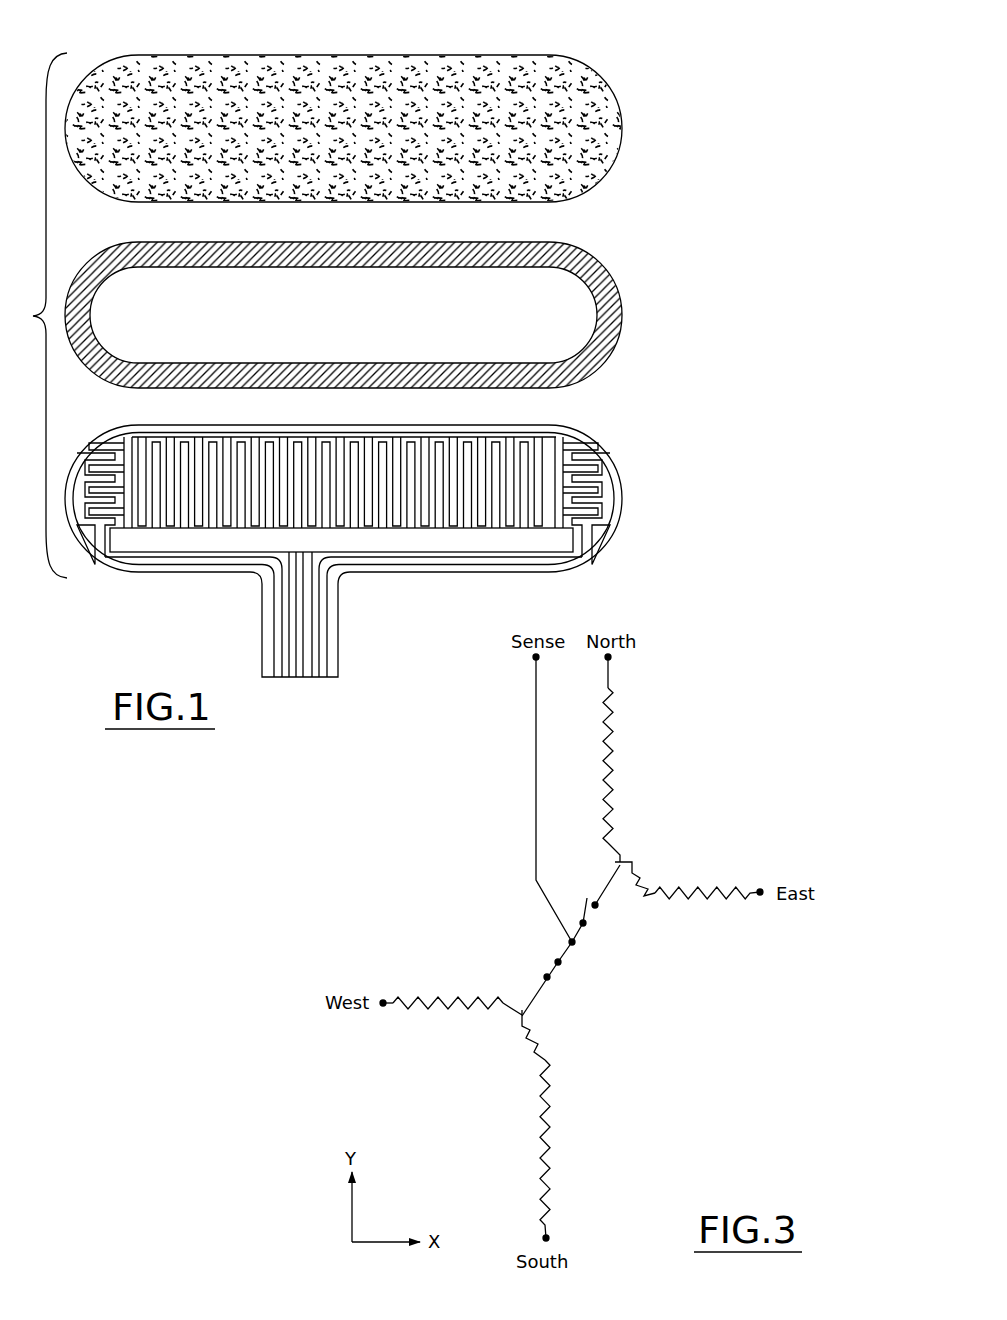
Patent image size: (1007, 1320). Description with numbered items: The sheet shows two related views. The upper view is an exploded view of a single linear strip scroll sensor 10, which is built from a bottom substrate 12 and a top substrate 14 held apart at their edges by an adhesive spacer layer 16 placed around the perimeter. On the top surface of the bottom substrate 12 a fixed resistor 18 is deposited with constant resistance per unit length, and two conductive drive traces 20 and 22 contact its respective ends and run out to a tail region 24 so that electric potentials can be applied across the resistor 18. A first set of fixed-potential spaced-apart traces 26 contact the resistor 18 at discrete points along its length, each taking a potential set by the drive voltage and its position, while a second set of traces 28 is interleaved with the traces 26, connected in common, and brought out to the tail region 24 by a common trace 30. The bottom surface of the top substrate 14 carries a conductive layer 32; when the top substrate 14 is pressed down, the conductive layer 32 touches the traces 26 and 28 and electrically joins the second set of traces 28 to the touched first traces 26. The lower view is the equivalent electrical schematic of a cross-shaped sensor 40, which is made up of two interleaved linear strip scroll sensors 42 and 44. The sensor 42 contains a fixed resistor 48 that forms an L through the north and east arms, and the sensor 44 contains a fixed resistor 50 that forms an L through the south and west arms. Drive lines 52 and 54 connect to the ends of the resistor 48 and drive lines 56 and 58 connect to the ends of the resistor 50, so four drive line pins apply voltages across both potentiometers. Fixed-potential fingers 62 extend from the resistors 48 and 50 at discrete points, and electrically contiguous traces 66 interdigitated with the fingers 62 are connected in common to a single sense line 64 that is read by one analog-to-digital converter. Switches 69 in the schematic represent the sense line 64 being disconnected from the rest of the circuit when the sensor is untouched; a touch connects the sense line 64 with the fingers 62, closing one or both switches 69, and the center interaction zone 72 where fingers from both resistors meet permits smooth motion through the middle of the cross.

In FIG. 1, the strip scroll sensor 10 is at (70, 380).
In FIG. 1, the bottom substrate 12 is at (376, 579).
In FIG. 1, the top substrate 14 is at (374, 103).
In FIG. 1, the adhesive spacer layer 16 is at (604, 257).
In FIG. 1, the fixed resistor 18 is at (148, 542).
In FIG. 1, the drive trace 20 is at (282, 678).
In FIG. 1, the drive trace 22 is at (300, 678).
In FIG. 1, the tail region 24 is at (338, 640).
In FIG. 1, the first set of fixed-potential traces 26 is at (243, 459).
In FIG. 1, the second set of conductive traces 28 is at (423, 458).
In FIG. 1, the common trace 30 is at (320, 678).
In FIG. 1, the conductive layer 32 is at (468, 73).
In FIG. 3, the cross-shaped sensor 40 is at (740, 750).
In FIG. 3, the linear strip scroll sensor 42 is at (666, 856).
In FIG. 3, the linear strip scroll sensor 44 is at (470, 1062).
In FIG. 3, the fixed resistor 48 is at (612, 789).
In FIG. 3, the fixed resistor 50 is at (548, 1080).
In FIG. 3, the drive line 52 is at (609, 657).
In FIG. 3, the drive line 54 is at (760, 896).
In FIG. 3, the drive line 56 is at (383, 1007).
In FIG. 3, the drive line 58 is at (550, 1238).
In FIG. 3, the fixed-potential fingers 62 is at (610, 887).
In FIG. 3, the sense line 64 is at (536, 742).
In FIG. 3, the conductive traces 66 is at (577, 937).
In FIG. 3, the switches 69 is at (583, 912).
In FIG. 3, the center interaction zone 72 is at (589, 963).